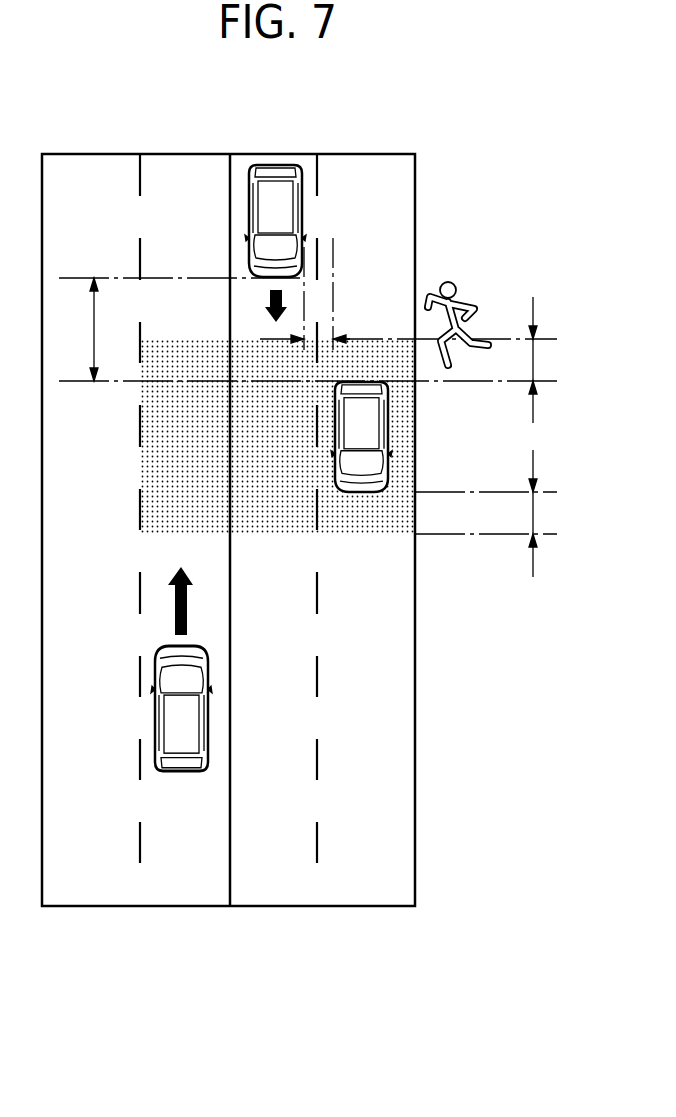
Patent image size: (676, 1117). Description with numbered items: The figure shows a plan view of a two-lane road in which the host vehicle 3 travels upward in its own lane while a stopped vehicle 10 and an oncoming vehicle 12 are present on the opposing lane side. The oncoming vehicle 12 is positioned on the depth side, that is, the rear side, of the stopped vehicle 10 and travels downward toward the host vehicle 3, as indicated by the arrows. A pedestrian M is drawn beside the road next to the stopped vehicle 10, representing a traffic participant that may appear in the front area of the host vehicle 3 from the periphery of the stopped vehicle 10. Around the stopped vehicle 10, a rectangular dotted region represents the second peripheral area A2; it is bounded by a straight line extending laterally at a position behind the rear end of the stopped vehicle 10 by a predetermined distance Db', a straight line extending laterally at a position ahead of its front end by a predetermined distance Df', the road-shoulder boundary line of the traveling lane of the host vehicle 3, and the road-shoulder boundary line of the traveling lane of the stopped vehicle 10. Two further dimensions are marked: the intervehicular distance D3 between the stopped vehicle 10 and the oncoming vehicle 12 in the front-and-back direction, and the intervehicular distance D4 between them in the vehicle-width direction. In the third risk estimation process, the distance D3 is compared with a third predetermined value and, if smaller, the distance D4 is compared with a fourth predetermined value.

The oncoming vehicle 12 is at (302, 217).
The stopped vehicle 10 is at (388, 446).
The host vehicle 3 is at (155, 702).
The pedestrian M is at (457, 289).
The second peripheral area A2 is at (345, 530).
The intervehicular distance D3 is at (80, 329).
The intervehicular distance D4 is at (314, 322).
The predetermined distance Db' is at (552, 360).
The predetermined distance Df' is at (550, 513).